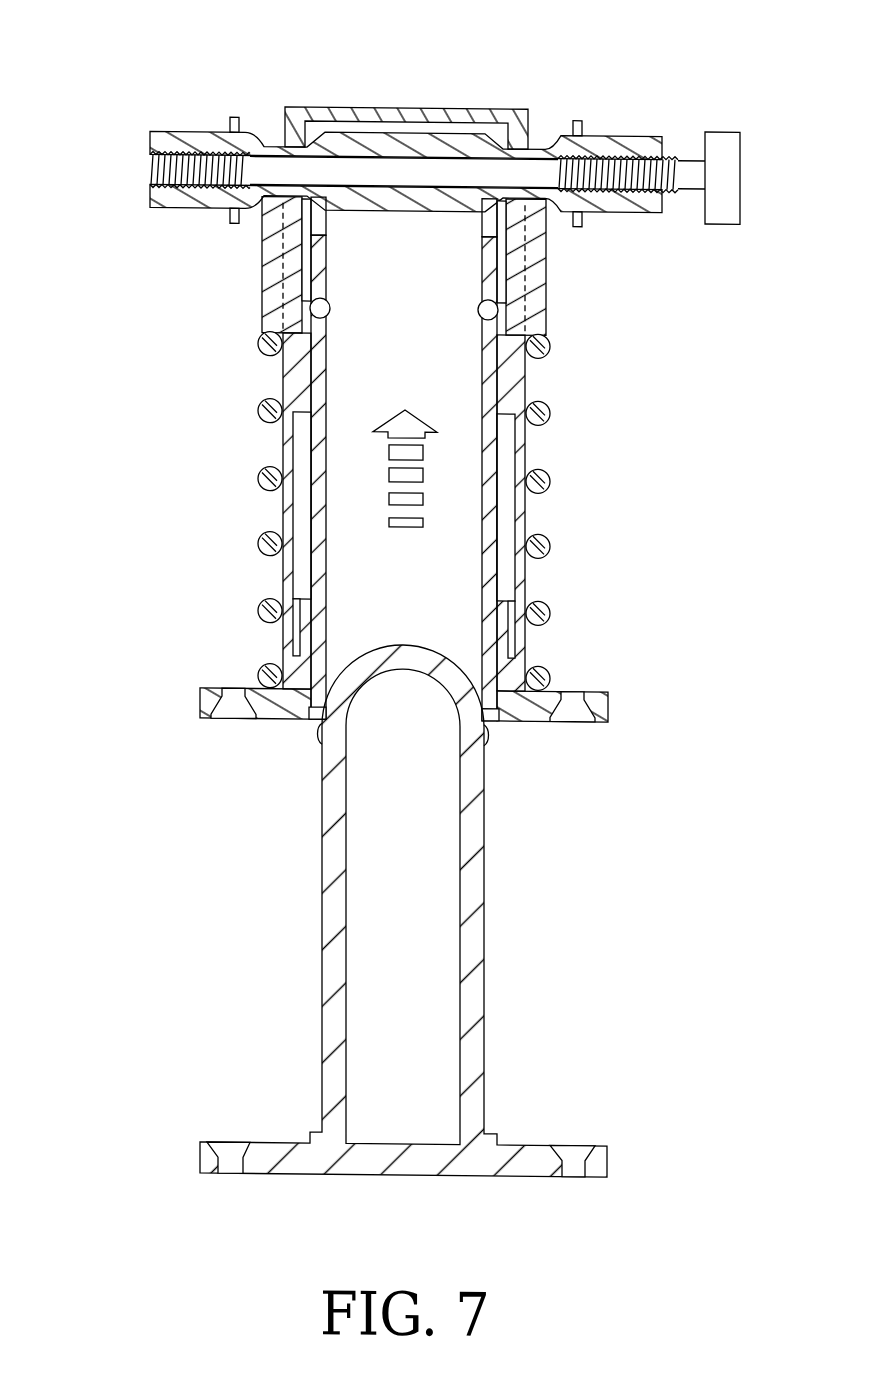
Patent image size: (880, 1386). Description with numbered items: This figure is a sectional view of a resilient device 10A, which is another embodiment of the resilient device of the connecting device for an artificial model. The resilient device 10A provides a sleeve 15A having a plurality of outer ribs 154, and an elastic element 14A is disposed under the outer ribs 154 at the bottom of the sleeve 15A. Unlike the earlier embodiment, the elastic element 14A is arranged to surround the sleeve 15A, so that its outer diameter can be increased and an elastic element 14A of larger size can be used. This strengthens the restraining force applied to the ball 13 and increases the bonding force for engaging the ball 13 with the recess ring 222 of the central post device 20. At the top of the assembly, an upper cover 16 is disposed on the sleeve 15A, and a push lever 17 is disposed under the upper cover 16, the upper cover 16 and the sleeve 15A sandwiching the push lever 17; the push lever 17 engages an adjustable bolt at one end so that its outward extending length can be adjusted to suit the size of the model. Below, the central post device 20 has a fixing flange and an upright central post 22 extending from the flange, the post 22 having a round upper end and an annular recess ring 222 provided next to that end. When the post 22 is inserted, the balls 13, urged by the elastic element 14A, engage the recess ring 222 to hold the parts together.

The resilient device 10A is at (406, 376).
The ball 13 is at (331, 313).
The elastic element 14A is at (549, 479).
The sleeve 15A is at (527, 384).
The outer ribs 154 is at (550, 277).
The upper cover 16 is at (395, 108).
The push lever 17 is at (620, 134).
The central post device 20 is at (355, 909).
The central post 22 is at (403, 910).
The annular recess ring 222 is at (484, 737).